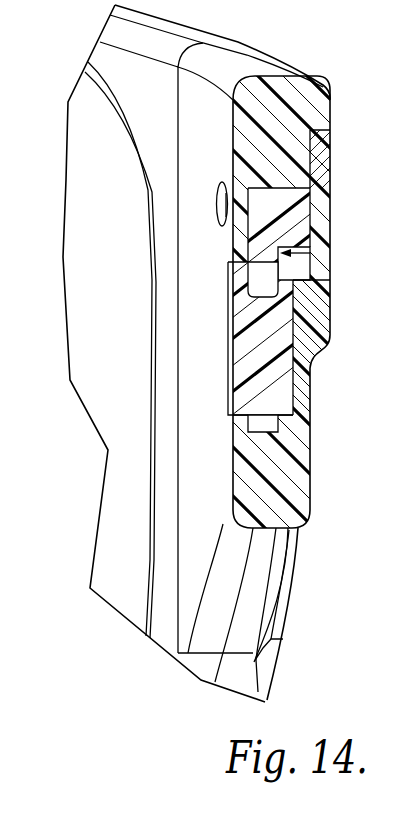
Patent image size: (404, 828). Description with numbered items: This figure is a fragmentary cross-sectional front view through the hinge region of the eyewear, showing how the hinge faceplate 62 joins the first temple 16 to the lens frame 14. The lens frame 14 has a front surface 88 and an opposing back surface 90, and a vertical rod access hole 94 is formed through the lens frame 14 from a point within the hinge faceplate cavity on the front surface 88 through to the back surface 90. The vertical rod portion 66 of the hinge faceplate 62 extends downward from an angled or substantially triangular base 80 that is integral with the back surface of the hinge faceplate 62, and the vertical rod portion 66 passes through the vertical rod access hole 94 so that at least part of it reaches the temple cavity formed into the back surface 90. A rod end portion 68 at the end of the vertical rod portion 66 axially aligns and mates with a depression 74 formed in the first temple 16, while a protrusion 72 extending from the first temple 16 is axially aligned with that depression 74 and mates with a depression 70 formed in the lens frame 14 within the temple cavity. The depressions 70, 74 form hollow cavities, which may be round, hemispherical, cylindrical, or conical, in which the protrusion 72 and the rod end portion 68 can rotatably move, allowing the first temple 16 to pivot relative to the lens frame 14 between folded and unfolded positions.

The lens frame 14 is at (298, 465).
The first temple 16 is at (243, 353).
The hinge faceplate 62 is at (322, 205).
The vertical rod portion 66 is at (252, 274).
The rod end portion 68 is at (250, 311).
The depression 70 is at (249, 438).
The protrusion 72 is at (258, 426).
The depression 74 is at (320, 321).
The base 80 is at (285, 205).
The front surface 88 is at (331, 150).
The back surface 90 is at (171, 105).
The vertical rod access hole 94 is at (310, 253).